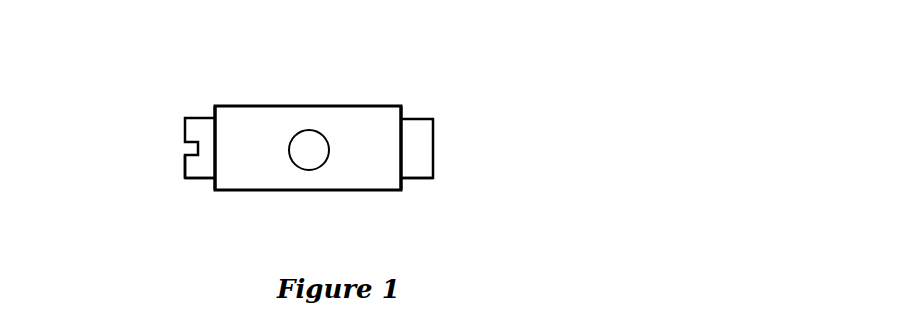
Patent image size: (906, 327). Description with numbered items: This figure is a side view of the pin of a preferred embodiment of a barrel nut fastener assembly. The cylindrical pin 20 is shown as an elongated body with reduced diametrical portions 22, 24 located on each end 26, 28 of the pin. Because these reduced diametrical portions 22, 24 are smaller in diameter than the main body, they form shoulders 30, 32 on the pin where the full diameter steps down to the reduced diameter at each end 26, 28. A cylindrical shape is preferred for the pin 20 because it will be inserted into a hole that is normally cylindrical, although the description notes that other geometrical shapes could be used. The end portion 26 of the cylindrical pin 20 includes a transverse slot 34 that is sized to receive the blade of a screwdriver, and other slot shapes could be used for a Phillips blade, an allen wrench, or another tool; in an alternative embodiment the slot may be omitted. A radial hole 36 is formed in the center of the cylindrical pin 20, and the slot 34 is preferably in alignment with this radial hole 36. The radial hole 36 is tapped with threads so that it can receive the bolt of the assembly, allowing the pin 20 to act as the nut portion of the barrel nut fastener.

The cylindrical pin 20 is at (148, 92).
The reduced diametrical portion 22 is at (200, 190).
The reduced diametrical portion 24 is at (420, 186).
The end 26 is at (173, 172).
The end 28 is at (448, 143).
The shoulder 30 is at (217, 108).
The shoulder 32 is at (407, 105).
The transverse slot 34 is at (184, 154).
The radial hole 36 is at (306, 151).